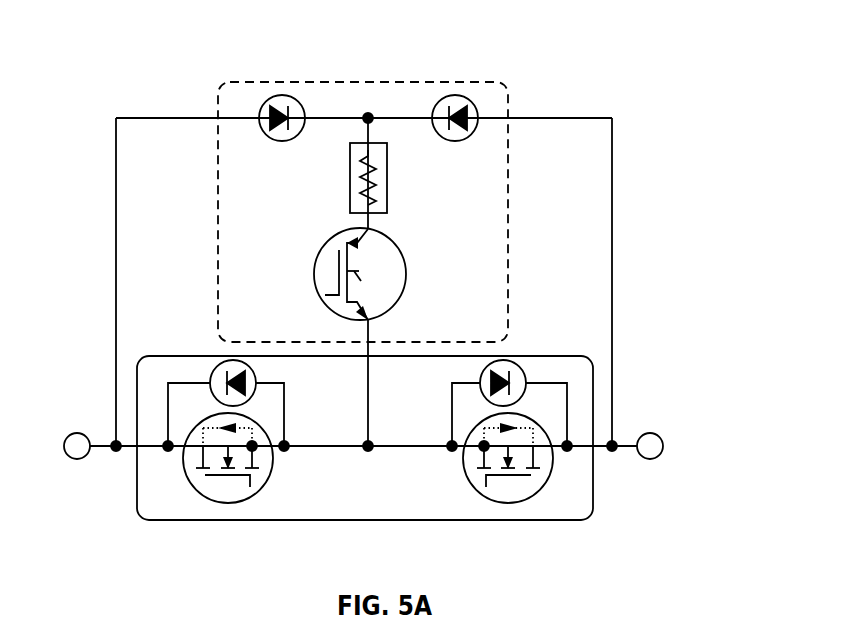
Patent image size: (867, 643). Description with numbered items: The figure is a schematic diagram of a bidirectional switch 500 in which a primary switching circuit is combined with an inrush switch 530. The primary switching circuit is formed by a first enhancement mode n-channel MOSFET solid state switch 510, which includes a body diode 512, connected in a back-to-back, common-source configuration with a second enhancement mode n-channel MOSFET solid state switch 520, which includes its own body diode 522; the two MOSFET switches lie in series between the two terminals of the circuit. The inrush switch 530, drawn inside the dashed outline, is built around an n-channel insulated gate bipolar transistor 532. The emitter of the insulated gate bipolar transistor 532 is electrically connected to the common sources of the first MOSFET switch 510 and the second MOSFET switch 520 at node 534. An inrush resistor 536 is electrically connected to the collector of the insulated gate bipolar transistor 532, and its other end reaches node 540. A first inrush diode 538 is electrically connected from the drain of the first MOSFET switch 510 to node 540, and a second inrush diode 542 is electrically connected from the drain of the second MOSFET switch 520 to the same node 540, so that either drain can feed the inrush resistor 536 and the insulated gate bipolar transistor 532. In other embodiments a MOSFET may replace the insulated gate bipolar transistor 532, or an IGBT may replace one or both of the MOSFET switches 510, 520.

The bidirectional switch 500 is at (640, 93).
The first enhancement mode n-channel MOSFET solid state switch 510 is at (223, 503).
The body diode 512 is at (234, 374).
The second enhancement mode n-channel MOSFET solid state switch 520 is at (530, 500).
The body diode 522 is at (503, 378).
The inrush switch 530 is at (504, 82).
The n-channel insulated gate bipolar transistor 532 is at (403, 252).
The node 534 is at (365, 450).
The inrush resistor 536 is at (388, 187).
The first inrush diode 538 is at (268, 98).
The node 540 is at (367, 114).
The second inrush diode 542 is at (458, 96).